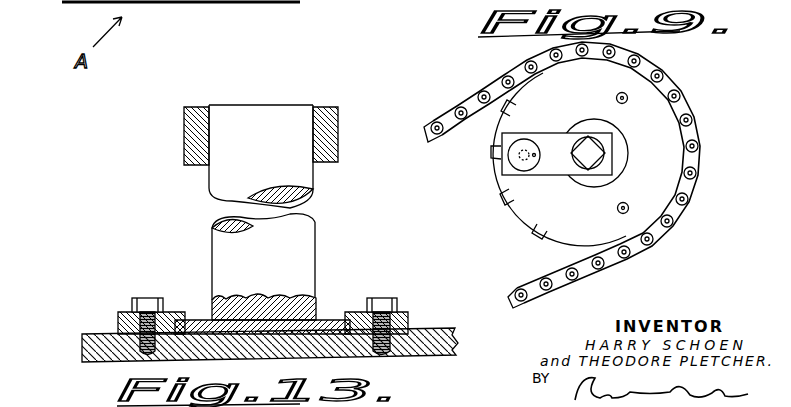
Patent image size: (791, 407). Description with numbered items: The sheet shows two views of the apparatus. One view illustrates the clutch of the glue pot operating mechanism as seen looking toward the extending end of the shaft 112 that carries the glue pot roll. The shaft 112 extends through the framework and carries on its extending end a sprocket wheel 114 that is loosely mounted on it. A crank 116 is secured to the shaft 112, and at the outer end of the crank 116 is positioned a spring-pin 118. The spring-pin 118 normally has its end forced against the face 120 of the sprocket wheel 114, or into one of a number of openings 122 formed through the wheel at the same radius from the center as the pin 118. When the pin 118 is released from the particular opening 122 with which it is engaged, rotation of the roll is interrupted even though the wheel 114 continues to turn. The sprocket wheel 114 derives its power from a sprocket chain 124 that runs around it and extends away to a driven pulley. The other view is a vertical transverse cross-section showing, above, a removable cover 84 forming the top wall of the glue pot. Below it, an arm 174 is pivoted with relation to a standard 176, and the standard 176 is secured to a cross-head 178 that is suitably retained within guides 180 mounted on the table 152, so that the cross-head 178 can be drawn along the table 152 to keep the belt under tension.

In FIG. 13, the removable cover 84 is at (243, 3).
In FIG. 13, the table 152 is at (82, 350).
In FIG. 13, the arm 174 is at (195, 135).
In FIG. 13, the standard 176 is at (216, 180).
In FIG. 13, the cross-head 178 is at (338, 311).
In FIG. 13, the guides 180 is at (120, 321).
In FIG. 9, the shaft 112 is at (576, 170).
In FIG. 9, the sprocket wheel 114 is at (498, 226).
In FIG. 9, the crank 116 is at (545, 142).
In FIG. 9, the spring-pin 118 is at (530, 171).
In FIG. 9, the face of wheel 120 is at (662, 132).
In FIG. 9, the openings 122 is at (623, 103).
In FIG. 9, the sprocket chain 124 is at (446, 120).